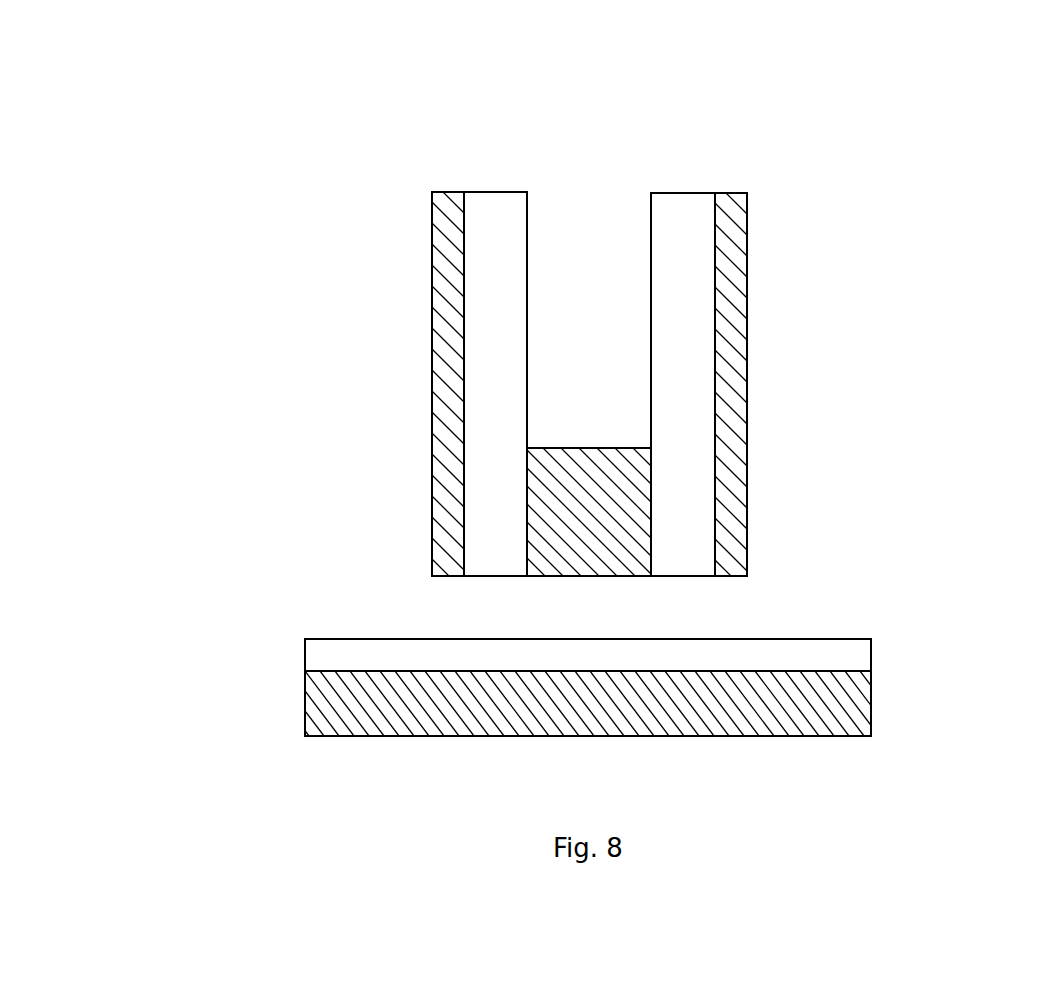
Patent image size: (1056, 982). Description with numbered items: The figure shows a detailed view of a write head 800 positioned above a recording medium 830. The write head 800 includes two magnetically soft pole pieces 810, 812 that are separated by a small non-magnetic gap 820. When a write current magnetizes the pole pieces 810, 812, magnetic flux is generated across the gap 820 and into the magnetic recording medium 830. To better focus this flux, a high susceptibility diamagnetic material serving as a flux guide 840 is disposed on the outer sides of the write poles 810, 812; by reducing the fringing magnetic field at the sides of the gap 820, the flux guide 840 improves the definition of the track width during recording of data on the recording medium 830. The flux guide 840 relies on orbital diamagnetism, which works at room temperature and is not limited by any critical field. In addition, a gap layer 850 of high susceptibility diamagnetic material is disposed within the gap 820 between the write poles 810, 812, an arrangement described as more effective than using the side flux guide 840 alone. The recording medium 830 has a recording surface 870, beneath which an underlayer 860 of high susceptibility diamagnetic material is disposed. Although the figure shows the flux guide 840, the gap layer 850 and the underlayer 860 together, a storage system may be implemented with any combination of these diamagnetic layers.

The write head 800 is at (288, 171).
The pole piece 810 is at (495, 208).
The pole piece 812 is at (667, 210).
The gap 820 is at (585, 585).
The recording medium 830 is at (933, 673).
The flux guide 840 is at (447, 365).
The gap layer 850 is at (620, 463).
The underlayer 860 is at (322, 707).
The recording surface 870 is at (322, 655).